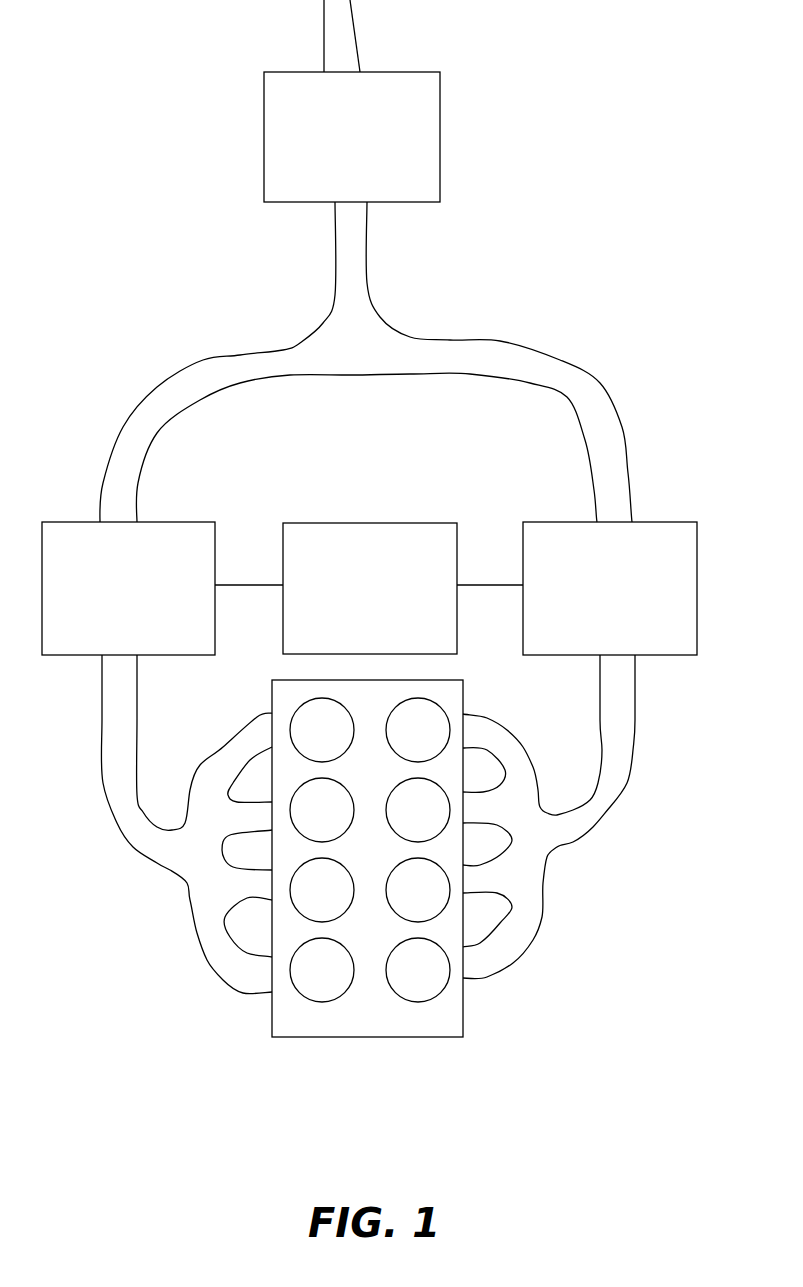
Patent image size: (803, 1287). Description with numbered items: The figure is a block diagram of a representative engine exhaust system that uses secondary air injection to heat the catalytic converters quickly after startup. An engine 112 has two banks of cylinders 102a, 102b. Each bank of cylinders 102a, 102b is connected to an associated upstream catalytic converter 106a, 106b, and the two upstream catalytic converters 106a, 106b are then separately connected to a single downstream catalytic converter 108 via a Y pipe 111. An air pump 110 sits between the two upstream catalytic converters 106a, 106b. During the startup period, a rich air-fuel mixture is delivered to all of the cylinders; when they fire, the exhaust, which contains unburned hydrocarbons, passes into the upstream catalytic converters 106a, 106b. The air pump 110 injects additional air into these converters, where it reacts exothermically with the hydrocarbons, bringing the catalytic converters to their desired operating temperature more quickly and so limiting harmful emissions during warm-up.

The bank of cylinders 102a is at (318, 1056).
The bank of cylinders 102b is at (412, 1056).
The upstream catalytic converter 106a is at (128, 588).
The upstream catalytic converter 106b is at (610, 588).
The downstream catalytic converter 108 is at (352, 137).
The air pump 110 is at (369, 588).
The Y pipe 111 is at (355, 352).
The engine 112 is at (349, 911).